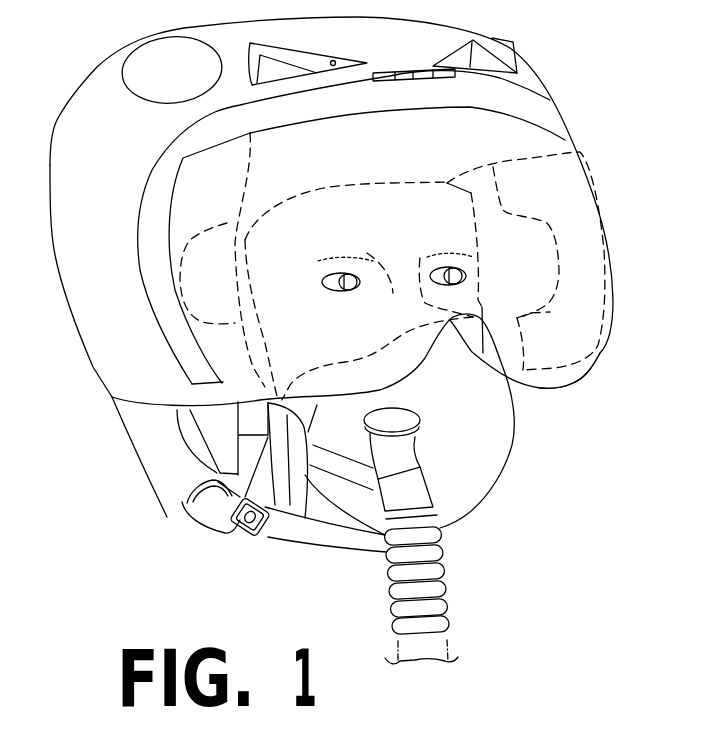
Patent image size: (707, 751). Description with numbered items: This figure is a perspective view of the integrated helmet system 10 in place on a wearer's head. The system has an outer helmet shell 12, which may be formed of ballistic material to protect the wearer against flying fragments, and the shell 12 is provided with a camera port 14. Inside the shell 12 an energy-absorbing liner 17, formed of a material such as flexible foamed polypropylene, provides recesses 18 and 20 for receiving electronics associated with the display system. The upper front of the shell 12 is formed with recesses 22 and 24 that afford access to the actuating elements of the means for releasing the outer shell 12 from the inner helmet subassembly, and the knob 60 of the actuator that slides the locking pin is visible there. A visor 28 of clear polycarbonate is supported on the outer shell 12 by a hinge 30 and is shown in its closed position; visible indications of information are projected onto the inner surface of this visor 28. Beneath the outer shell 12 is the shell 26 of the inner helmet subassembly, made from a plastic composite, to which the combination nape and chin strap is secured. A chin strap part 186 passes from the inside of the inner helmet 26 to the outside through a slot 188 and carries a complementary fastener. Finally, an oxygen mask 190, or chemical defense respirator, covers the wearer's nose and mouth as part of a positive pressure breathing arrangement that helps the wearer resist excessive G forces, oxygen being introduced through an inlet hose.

The integrated helmet system 10 is at (573, 107).
The outer helmet shell 12 is at (62, 207).
The camera port 14 is at (160, 50).
The energy-absorbing liner 17 is at (592, 359).
The recess 18 is at (218, 196).
The recess 20 is at (540, 216).
The recess 22 is at (310, 0).
The recess 24 is at (460, 48).
The inner helmet subassembly shell 26 is at (140, 430).
The visor 28 is at (557, 153).
The hinge 30 is at (425, 80).
The knob 60 is at (335, 62).
The chin strap part 186 is at (217, 503).
The slot 188 is at (180, 503).
The oxygen mask 190 is at (487, 474).